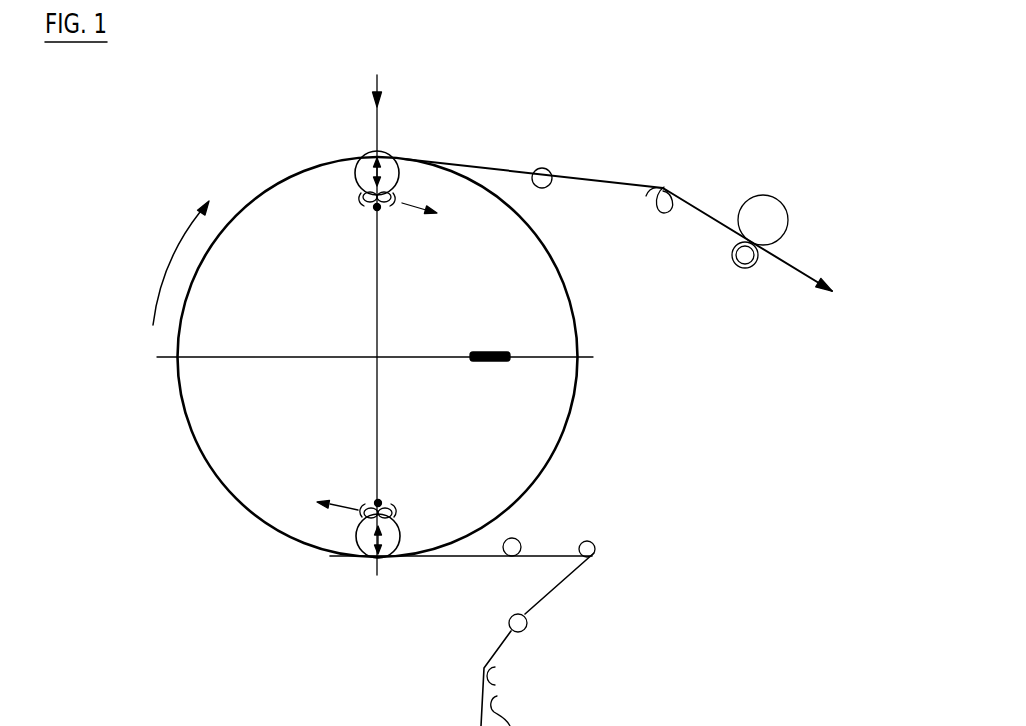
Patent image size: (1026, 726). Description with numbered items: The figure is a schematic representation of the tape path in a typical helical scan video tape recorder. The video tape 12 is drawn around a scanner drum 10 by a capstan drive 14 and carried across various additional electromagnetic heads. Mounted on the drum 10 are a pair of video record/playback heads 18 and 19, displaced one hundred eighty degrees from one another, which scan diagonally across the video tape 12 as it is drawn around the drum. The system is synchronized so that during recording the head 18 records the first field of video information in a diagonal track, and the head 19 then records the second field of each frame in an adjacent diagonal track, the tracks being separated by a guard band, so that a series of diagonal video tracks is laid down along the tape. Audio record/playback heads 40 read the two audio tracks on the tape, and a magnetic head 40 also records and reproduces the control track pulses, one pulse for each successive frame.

The scanner drum 10 is at (190, 382).
The video tape 12 is at (600, 177).
The capstan drive 14 is at (741, 267).
The video record/playback head 18 is at (355, 180).
The video record/playback head 19 is at (354, 535).
The audio record/playback heads 40 is at (677, 186).